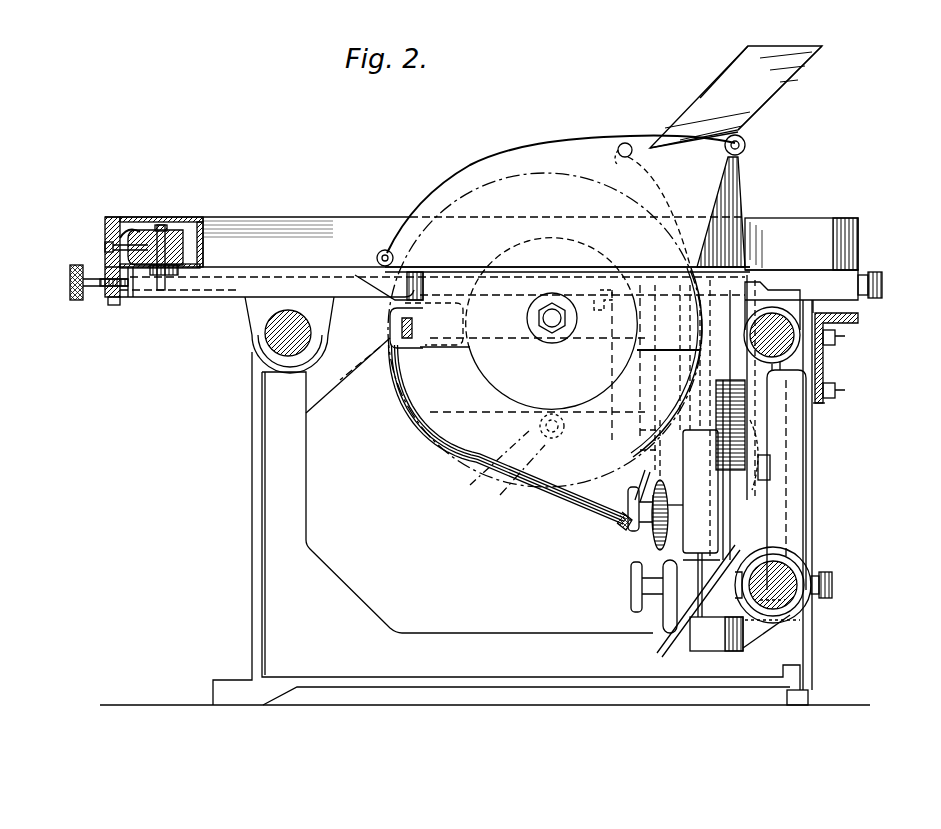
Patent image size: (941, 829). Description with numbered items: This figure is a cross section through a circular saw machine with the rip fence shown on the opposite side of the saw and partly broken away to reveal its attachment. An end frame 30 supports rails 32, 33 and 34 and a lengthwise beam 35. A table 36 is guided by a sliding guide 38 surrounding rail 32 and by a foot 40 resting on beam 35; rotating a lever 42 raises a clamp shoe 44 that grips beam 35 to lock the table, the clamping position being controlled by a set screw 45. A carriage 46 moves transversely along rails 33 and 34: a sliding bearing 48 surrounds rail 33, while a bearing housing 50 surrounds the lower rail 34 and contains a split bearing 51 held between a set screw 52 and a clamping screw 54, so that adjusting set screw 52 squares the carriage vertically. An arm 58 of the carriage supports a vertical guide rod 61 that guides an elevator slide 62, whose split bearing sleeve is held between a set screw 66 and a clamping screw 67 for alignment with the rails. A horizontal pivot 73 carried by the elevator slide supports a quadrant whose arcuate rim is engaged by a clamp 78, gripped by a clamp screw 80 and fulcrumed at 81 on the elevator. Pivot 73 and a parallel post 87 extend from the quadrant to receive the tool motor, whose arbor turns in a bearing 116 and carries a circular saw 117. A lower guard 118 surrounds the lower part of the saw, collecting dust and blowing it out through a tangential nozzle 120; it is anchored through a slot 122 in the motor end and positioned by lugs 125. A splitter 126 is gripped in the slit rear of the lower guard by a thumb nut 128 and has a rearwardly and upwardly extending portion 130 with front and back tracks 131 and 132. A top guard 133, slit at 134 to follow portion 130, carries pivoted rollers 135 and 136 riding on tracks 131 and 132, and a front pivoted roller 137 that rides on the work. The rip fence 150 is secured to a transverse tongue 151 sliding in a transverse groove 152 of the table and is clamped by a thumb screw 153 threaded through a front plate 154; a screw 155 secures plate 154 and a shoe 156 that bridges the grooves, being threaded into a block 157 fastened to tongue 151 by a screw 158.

The end frame 30 is at (300, 485).
The rail 32 is at (266, 341).
The rail 33 is at (790, 350).
The rail 34 is at (790, 575).
The beam 35 is at (823, 403).
The table 36 is at (224, 295).
The sliding guide 38 is at (291, 358).
The foot 40 is at (850, 282).
The lever 42 is at (882, 283).
The clamp shoe 44 is at (830, 328).
The set screw 45 is at (845, 345).
The carriage 46 is at (752, 496).
The sliding bearing 48 is at (778, 366).
The bearing housing 50 is at (790, 612).
The split bearing 51 is at (800, 598).
The set screw 52 is at (832, 584).
The clamping screw 54 is at (650, 590).
The arm 58 is at (700, 650).
The guide rod 61 is at (690, 620).
The elevator slide 62 is at (701, 523).
The set screw 66 is at (770, 462).
The clamping screw 67 is at (628, 462).
The pivot 73 is at (537, 362).
The clamp 78 is at (658, 540).
The clamp screw 80 is at (640, 515).
The fulcrum 81 is at (683, 540).
The post 87 is at (533, 490).
The bearing 116 is at (548, 322).
The circular saw 117 is at (415, 290).
The lower guard 118 is at (463, 448).
The tangential nozzle 120 is at (620, 520).
The slot 122 is at (740, 430).
The lug 125 is at (420, 420).
The splitter 126 is at (728, 225).
The thumb nut 128 is at (748, 400).
The rearwardly and upwardly extending portion 130 is at (748, 108).
The track 131 is at (715, 82).
The track 132 is at (790, 75).
The top guard 133 is at (538, 155).
The slit 134 is at (650, 130).
The pivoted roller 135 is at (625, 143).
The pivoted roller 136 is at (746, 146).
The pivoted roller 137 is at (378, 250).
The rip fence 150 is at (276, 217).
The transverse tongue 151 is at (162, 275).
The transverse groove 152 is at (140, 297).
The thumb screw 153 is at (76, 300).
The front plate 154 is at (114, 305).
The screw 155 is at (105, 248).
The shoe 156 is at (128, 238).
The block 157 is at (150, 230).
The screw 158 is at (165, 232).